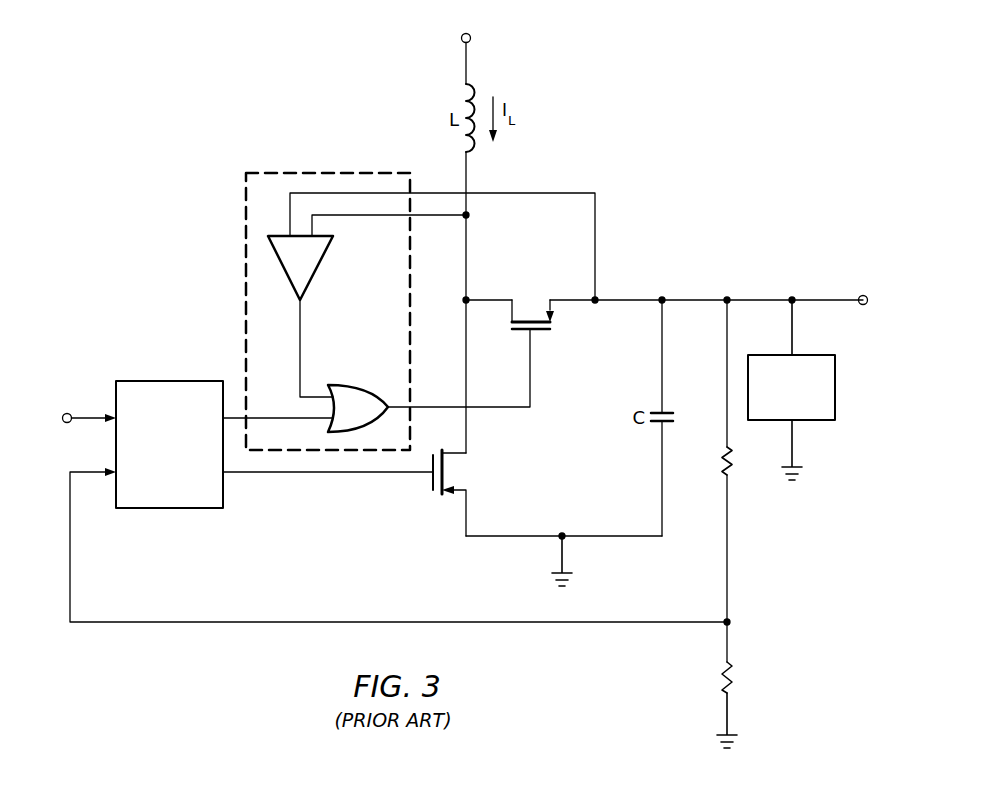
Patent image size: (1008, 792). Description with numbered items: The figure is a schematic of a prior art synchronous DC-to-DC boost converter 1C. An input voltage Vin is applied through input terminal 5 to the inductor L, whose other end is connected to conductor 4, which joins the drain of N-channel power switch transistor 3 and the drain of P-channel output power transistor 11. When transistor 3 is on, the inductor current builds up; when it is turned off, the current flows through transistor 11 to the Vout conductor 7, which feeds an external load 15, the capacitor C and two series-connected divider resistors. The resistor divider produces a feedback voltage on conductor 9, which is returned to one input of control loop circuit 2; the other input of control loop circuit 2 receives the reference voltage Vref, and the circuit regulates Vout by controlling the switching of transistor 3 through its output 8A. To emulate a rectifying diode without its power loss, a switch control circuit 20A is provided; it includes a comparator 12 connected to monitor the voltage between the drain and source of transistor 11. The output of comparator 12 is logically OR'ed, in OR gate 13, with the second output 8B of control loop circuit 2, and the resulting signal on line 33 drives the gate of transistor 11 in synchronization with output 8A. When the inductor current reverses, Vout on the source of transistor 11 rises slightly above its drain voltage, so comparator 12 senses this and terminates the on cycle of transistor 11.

The boost converter 1C is at (704, 85).
The control loop circuit 2 is at (168, 381).
The N-channel power switch transistor 3 is at (430, 482).
The conductor 4 is at (488, 300).
The input terminal Vin 5 is at (466, 62).
The Vout conductor 7 is at (696, 300).
The output of control loop circuit 8A is at (310, 472).
The output of control loop circuit 8B is at (290, 418).
The feedback conductor 9 is at (727, 540).
The P-channel output power transistor 11 is at (535, 332).
The comparator 12 is at (318, 272).
The OR gate 13 is at (366, 386).
The load 15 is at (835, 388).
The switch control circuit 20A is at (302, 168).
The gate drive line 33 is at (498, 409).